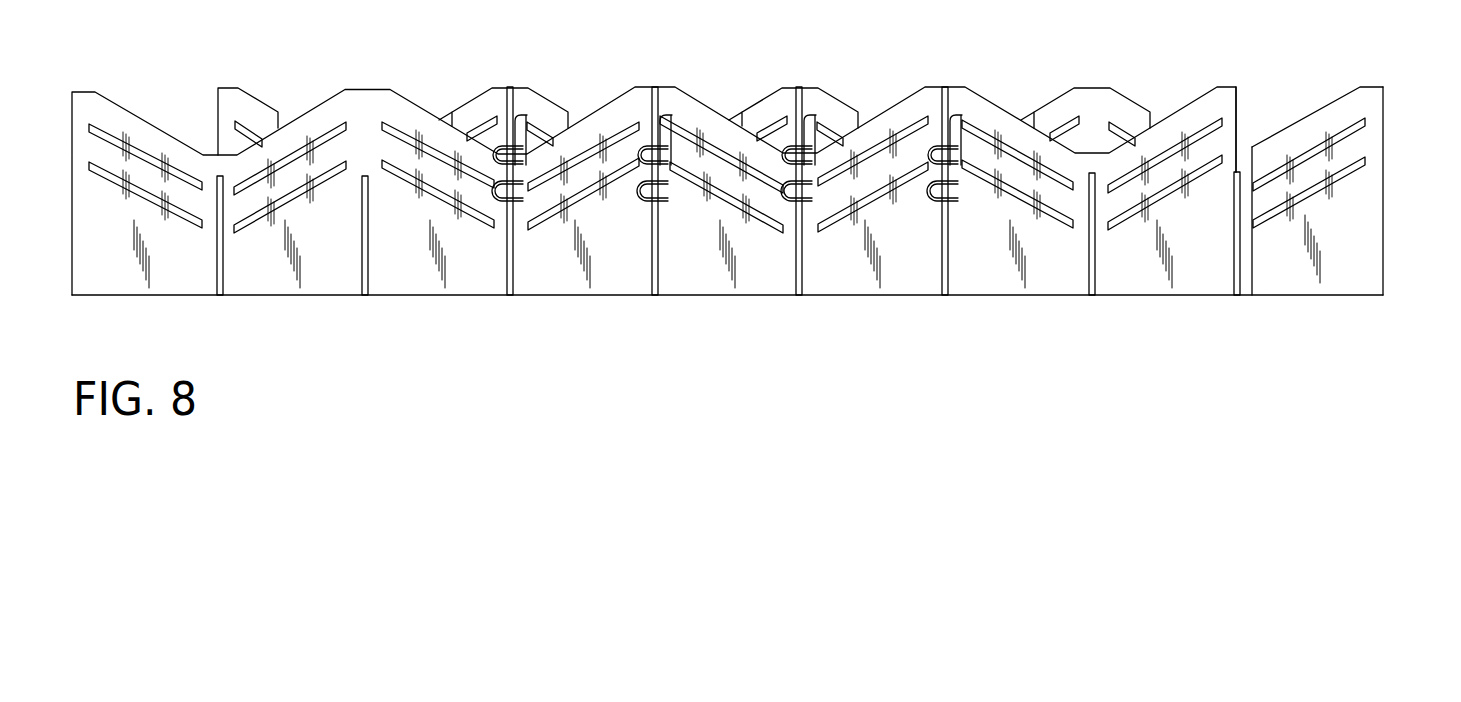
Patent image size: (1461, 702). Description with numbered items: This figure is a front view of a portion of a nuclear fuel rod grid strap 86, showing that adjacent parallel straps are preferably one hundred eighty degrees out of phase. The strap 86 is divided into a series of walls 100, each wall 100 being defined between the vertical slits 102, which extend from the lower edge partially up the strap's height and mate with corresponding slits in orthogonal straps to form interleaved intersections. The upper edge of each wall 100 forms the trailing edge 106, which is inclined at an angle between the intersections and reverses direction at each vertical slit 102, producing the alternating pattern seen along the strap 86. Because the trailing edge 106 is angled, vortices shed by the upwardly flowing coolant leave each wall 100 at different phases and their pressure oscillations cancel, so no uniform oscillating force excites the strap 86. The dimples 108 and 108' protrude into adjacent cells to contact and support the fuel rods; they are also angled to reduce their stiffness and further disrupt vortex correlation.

The grid strap 86 is at (1237, 112).
The wall 100 is at (1128, 275).
The vertical slit 102 is at (657, 265).
The trailing edge 106 is at (148, 123).
The dimple 108 is at (1318, 243).
The dimple 108' is at (1324, 87).